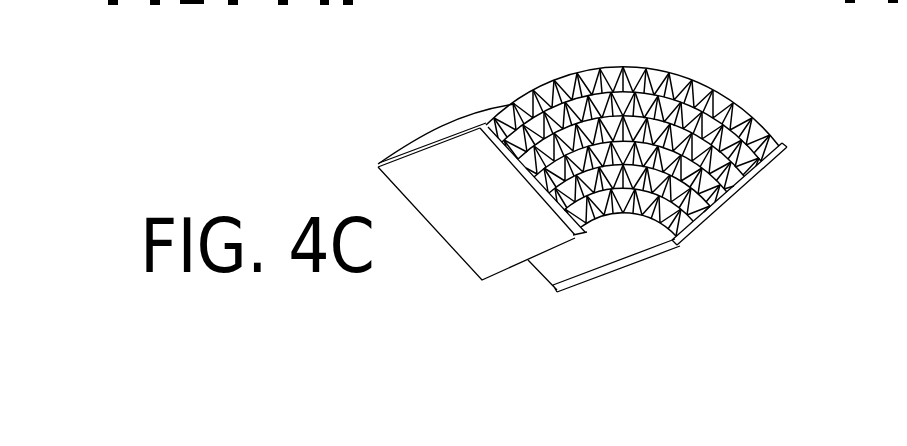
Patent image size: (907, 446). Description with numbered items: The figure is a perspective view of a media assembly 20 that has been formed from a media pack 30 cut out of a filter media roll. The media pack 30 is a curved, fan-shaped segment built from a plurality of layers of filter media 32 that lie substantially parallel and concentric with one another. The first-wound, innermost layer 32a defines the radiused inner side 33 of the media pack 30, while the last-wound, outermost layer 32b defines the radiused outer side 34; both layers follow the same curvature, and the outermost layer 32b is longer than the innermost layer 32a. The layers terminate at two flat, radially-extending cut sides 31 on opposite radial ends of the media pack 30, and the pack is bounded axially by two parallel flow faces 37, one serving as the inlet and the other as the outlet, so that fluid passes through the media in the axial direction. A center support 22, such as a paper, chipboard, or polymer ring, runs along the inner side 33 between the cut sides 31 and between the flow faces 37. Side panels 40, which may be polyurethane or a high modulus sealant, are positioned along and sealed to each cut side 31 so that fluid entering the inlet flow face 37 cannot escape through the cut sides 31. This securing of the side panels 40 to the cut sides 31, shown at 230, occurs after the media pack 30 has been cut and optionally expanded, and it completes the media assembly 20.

The media assembly 20 is at (637, 163).
The center support 22 is at (647, 222).
The media pack 30 is at (666, 71).
The cut sides 31 is at (482, 124).
The filter media 32 is at (733, 102).
The innermost layer 32a is at (684, 220).
The outermost layer 32b is at (707, 94).
The inner side 33 is at (603, 220).
The outer side 34 is at (569, 74).
The flow faces 37 is at (546, 270).
The side panel 40 is at (470, 250).
The securing step 230 is at (627, 163).